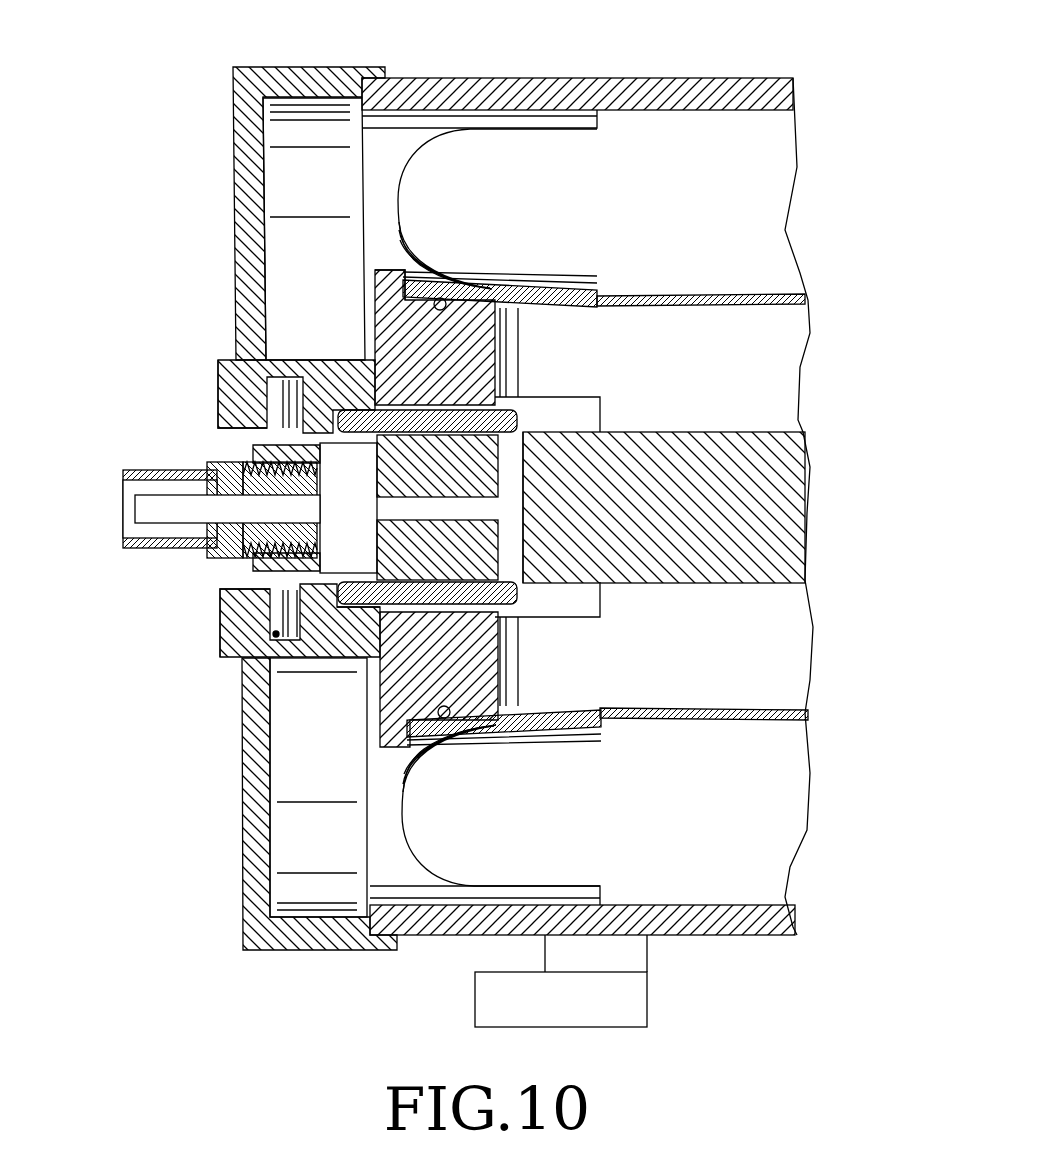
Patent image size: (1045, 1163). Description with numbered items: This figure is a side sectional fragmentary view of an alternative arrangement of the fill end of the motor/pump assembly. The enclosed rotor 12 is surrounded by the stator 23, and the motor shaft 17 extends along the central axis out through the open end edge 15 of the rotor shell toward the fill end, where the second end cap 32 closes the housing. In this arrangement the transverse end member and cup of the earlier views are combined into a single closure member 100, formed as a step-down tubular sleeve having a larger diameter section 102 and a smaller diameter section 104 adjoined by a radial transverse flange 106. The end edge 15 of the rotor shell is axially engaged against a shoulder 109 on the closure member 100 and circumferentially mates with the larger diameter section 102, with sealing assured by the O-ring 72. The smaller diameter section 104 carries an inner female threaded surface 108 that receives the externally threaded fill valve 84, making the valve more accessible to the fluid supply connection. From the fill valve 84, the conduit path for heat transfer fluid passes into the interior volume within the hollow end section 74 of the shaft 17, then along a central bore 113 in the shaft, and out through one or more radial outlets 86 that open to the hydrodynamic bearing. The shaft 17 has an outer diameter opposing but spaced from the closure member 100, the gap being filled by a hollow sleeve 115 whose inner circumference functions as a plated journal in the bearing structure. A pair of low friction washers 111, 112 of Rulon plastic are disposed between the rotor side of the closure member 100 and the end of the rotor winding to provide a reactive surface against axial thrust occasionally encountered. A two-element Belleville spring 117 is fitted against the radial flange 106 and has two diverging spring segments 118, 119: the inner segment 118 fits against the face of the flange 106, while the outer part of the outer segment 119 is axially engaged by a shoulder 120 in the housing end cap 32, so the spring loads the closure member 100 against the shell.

The rotor 12 is at (777, 355).
The end edge 15 is at (392, 356).
The motor shaft 17 is at (750, 468).
The stator 23 is at (613, 197).
The second end cap 32 is at (233, 150).
The O-ring 72 is at (438, 297).
The hollow end section 74 is at (393, 590).
The fill valve 84 is at (137, 470).
The radial outlets 86 is at (510, 474).
The closure member 100 is at (470, 305).
The larger diameter section 102 is at (372, 346).
The smaller diameter section 104 is at (237, 585).
The radial transverse flange 106 is at (230, 433).
The female threaded surface 108 is at (268, 462).
The shoulder 109 is at (373, 280).
The low friction washer 111 is at (268, 798).
The low friction washer 112 is at (401, 603).
The central bore 113 is at (490, 513).
The hollow sleeve 115 is at (368, 622).
The Belleville spring 117 is at (278, 640).
The inner spring segment 118 is at (232, 577).
The outer spring segment 119 is at (228, 598).
The shoulder 120 is at (267, 375).